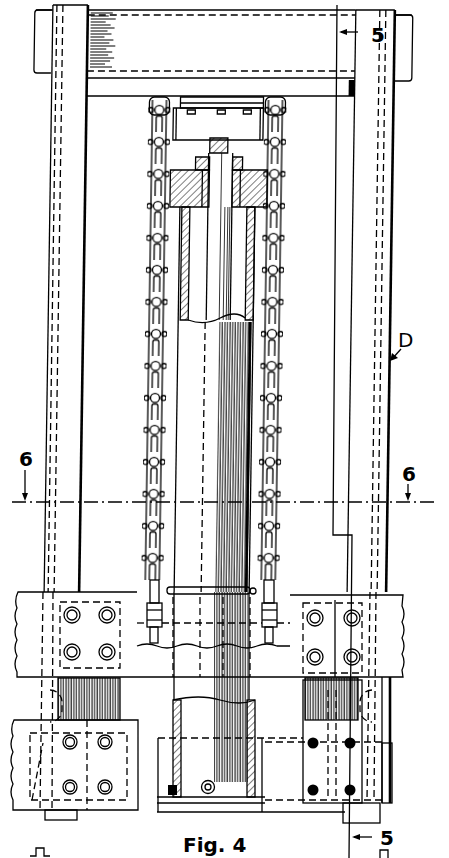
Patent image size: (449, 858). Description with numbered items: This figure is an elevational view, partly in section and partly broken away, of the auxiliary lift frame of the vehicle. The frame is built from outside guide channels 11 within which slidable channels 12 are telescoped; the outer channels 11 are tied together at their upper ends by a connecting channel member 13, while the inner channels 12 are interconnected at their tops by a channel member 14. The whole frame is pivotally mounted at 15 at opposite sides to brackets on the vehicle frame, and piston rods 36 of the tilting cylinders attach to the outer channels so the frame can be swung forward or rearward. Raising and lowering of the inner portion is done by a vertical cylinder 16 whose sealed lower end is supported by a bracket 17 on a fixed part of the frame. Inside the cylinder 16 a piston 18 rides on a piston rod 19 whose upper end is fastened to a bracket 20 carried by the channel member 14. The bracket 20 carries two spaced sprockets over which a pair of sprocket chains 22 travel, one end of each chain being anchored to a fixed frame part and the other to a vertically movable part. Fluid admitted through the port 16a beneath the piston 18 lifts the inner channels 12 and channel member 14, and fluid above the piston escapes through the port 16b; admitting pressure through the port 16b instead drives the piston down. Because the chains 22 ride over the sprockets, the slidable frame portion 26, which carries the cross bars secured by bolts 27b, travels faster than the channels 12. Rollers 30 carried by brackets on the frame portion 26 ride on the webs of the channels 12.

The outside guide channel 11 is at (52, 135).
The slidable channel 12 is at (62, 167).
The connecting channel member 13 is at (396, 62).
The channel member 14 is at (103, 85).
The pivotal mounting 15 is at (392, 770).
The vertical cylinder 16 is at (236, 347).
The port 16a is at (204, 782).
The port 16b is at (180, 209).
The bracket 17 is at (258, 770).
The piston 18 is at (243, 727).
The piston rod 19 is at (218, 282).
The bracket 20 is at (257, 135).
The sprocket chain 22 is at (147, 398).
The slidable frame portion 26 is at (108, 690).
The bolt 27b is at (353, 657).
The roller 30 is at (53, 710).
The piston rod 36 is at (224, 849).